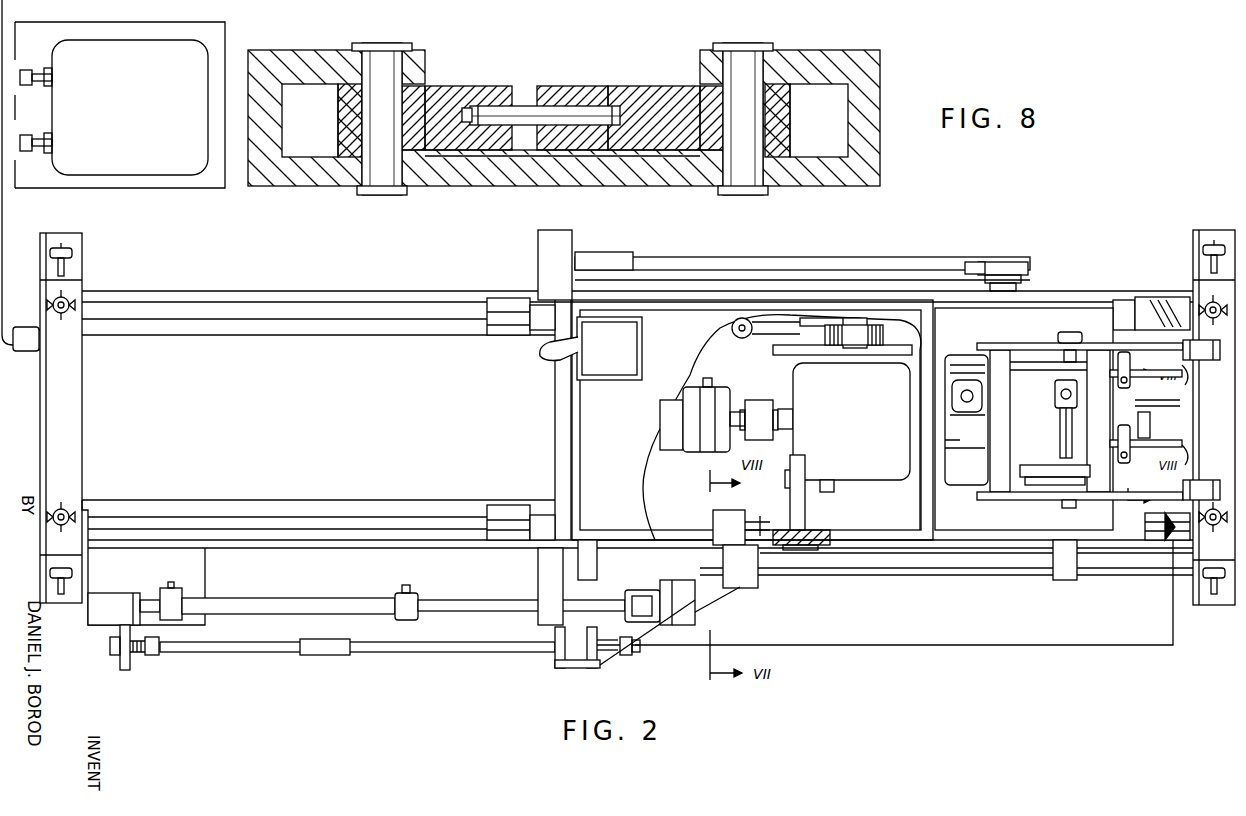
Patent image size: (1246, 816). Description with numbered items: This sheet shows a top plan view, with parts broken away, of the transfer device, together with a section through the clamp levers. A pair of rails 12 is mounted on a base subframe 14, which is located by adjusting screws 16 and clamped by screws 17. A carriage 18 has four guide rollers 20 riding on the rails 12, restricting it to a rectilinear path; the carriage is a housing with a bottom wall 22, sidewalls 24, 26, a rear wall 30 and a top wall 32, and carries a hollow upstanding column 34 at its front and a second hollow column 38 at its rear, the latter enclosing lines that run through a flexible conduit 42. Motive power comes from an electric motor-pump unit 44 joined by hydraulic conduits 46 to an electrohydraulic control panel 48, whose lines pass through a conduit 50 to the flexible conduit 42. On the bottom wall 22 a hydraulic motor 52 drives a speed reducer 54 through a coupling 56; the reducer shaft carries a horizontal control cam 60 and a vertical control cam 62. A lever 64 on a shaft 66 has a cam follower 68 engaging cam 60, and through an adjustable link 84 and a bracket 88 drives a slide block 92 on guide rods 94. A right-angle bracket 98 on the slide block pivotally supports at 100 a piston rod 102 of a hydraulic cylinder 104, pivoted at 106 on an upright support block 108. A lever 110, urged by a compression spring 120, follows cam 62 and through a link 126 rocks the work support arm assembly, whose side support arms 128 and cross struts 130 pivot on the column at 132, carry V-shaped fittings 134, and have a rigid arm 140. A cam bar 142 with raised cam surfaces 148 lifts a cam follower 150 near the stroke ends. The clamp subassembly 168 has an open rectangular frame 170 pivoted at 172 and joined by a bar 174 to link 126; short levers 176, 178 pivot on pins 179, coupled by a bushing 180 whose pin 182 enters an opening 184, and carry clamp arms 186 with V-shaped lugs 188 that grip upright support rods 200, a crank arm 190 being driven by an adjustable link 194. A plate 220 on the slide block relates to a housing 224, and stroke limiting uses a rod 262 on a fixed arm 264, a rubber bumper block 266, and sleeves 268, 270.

In FIG. 2, the rails 12 is at (238, 308).
In FIG. 2, the base subframe 14 is at (243, 504).
In FIG. 2, the adjusting screws 16 is at (1214, 240).
In FIG. 2, the clamping screws 17 is at (66, 505).
In FIG. 2, the carriage 18 is at (858, 292).
In FIG. 2, the guide rollers 20 is at (492, 505).
In FIG. 2, the bottom wall 22 is at (682, 370).
In FIG. 2, the sidewall 24 is at (1082, 552).
In FIG. 2, the sidewall 26 is at (1065, 310).
In FIG. 2, the rear wall 30 is at (553, 436).
In FIG. 2, the top wall 32 is at (580, 415).
In FIG. 2, the hollow upstanding column 34 is at (960, 486).
In FIG. 2, the second hollow column 38 is at (603, 380).
In FIG. 2, the flexible conduit 42 is at (545, 352).
In FIG. 2, the electric motor-pump unit 44 is at (195, 62).
In FIG. 2, the hydraulic conduits 46 is at (32, 70).
In FIG. 2, the electrohydraulic control panel 48 is at (8, 30).
In FIG. 2, the conduit 50 is at (2, 232).
In FIG. 2, the hydraulic motor 52 is at (672, 440).
In FIG. 2, the speed reducer 54 is at (800, 378).
In FIG. 2, the coupling 56 is at (762, 402).
In FIG. 2, the horizontal control cam 60 is at (882, 480).
In FIG. 2, the vertical control cam 62 is at (857, 355).
In FIG. 2, the lever 64 is at (806, 490).
In FIG. 2, the shaft 66 is at (798, 468).
In FIG. 2, the cam follower 68 is at (835, 480).
In FIG. 2, the adjustable link 84 is at (832, 540).
In FIG. 2, the bracket 88 is at (712, 522).
In FIG. 2, the slide block 92 is at (755, 580).
In FIG. 2, the guide rods 94 is at (865, 570).
In FIG. 2, the right-angle bracket 98 is at (700, 610).
In FIG. 2, the pivotal connection 100 is at (648, 652).
In FIG. 2, the piston rod 102 is at (463, 605).
In FIG. 2, the hydraulic cylinder 104 is at (270, 600).
In FIG. 2, the pivotal support 106 is at (160, 596).
In FIG. 2, the upright support block 108 is at (110, 596).
In FIG. 2, the lever 110 is at (760, 328).
In FIG. 2, the compression spring 120 is at (798, 324).
In FIG. 2, the link 126 is at (963, 410).
In FIG. 2, the side support arms 128 is at (1035, 343).
In FIG. 2, the cross struts 130 is at (1115, 345).
In FIG. 2, the pivot 132 is at (1070, 520).
In FIG. 2, the V-shaped fittings 134 is at (1185, 318).
In FIG. 2, the rigid arm 140 is at (975, 385).
In FIG. 2, the cam bar 142 is at (738, 262).
In FIG. 2, the raised cam surfaces 148 is at (608, 264).
In FIG. 2, the cam follower 150 is at (978, 262).
In FIG. 2, the clamp subassembly 168 is at (1003, 492).
In FIG. 2, the open rectangular frame 170 is at (1020, 343).
In FIG. 2, the pivot axis 172 is at (1088, 455).
In FIG. 2, the bar 174 is at (1015, 430).
In FIG. 8, the short lever 176 is at (465, 88).
In FIG. 2, the short lever 176 is at (1168, 407).
In FIG. 8, the short lever 178 is at (690, 98).
In FIG. 2, the short lever 178 is at (1137, 428).
In FIG. 8, the pivot pins 179 is at (395, 44).
In FIG. 8, the bushing 180 is at (585, 88).
In FIG. 8, the pin 182 is at (535, 105).
In FIG. 8, the opening 184 is at (466, 122).
In FIG. 2, the clamp arms 186 is at (1148, 407).
In FIG. 2, the V-shaped lug 188 is at (1197, 415).
In FIG. 2, the crank arm 190 is at (1078, 395).
In FIG. 2, the adjustable link 194 is at (1073, 425).
In FIG. 2, the upright support rods 200 is at (1203, 420).
In FIG. 2, the plate 220 is at (628, 600).
In FIG. 2, the housing 224 is at (1050, 645).
In FIG. 2, the rod 262 is at (430, 652).
In FIG. 2, the fixed arm 264 is at (126, 670).
In FIG. 2, the rubber bumper block 266 is at (575, 665).
In FIG. 2, the sleeve 268 is at (235, 652).
In FIG. 2, the sleeve 270 is at (605, 642).